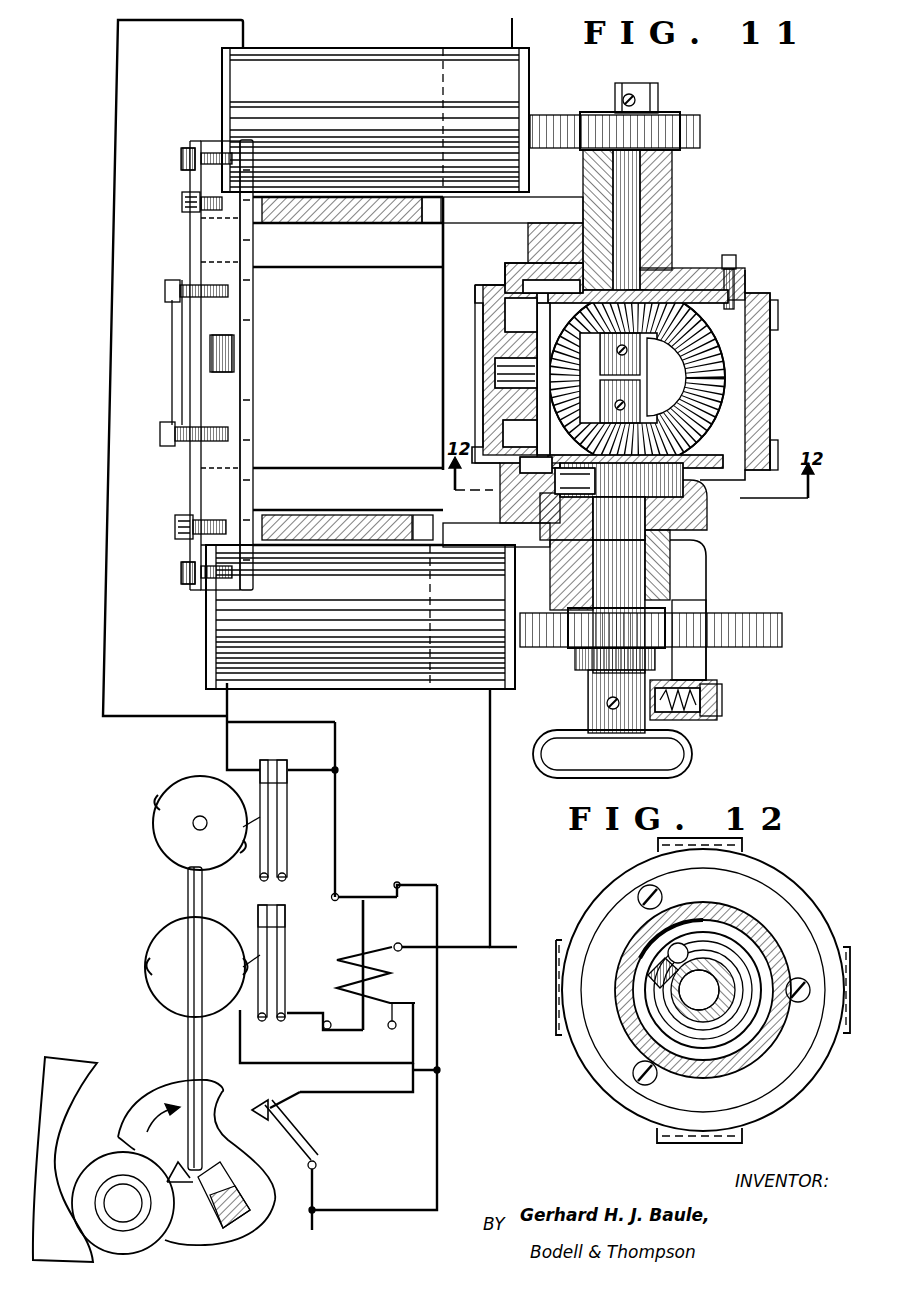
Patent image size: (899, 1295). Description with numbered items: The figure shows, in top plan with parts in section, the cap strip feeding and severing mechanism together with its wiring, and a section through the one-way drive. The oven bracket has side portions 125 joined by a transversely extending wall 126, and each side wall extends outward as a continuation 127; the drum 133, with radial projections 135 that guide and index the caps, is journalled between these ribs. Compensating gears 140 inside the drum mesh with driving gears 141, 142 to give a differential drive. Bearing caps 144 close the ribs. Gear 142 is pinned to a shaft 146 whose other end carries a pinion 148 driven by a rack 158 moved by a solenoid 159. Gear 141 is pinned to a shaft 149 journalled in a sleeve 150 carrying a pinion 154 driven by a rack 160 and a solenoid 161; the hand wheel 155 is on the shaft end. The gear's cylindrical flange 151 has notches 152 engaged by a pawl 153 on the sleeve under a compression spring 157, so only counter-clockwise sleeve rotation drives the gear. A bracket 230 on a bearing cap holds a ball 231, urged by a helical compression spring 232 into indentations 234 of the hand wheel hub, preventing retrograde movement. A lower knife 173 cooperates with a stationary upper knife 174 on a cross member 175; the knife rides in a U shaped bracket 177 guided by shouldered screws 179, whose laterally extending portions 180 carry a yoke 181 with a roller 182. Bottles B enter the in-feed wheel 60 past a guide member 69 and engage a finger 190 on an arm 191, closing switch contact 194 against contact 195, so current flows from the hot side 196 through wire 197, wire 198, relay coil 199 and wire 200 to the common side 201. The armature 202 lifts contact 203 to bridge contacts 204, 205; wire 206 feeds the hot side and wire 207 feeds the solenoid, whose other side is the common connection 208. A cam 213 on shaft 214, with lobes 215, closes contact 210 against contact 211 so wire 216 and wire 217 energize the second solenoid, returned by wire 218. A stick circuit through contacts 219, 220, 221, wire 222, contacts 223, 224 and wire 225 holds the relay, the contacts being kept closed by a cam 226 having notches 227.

In FIG. 11, the in-feed wheel 60 is at (141, 1096).
In FIG. 11, the guide member 69 is at (58, 1118).
In FIG. 11, the bottles B is at (88, 1172).
In FIG. 11, the side portions 125 is at (368, 222).
In FIG. 11, the transversely extending wall 126 is at (348, 371).
In FIG. 11, the continuation 127 is at (493, 222).
In FIG. 11, the drum 133 is at (757, 382).
In FIG. 11, the radial projections 135 is at (474, 290).
In FIG. 12, the radial projections 135 is at (738, 847).
In FIG. 11, the compensating gears 140 is at (540, 324).
In FIG. 11, the driving gear 141 is at (702, 443).
In FIG. 11, the driving gear 142 is at (677, 290).
In FIG. 11, the bearing caps 144 is at (672, 195).
In FIG. 11, the shaft 146 is at (632, 228).
In FIG. 11, the pinion 148 is at (667, 118).
In FIG. 11, the shaft 149 is at (633, 378).
In FIG. 11, the sleeve 150 is at (607, 573).
In FIG. 12, the sleeve 150 is at (722, 960).
In FIG. 11, the cylindrical flange 151 is at (557, 480).
In FIG. 12, the cylindrical flange 151 is at (722, 928).
In FIG. 12, the notches 152 is at (645, 984).
In FIG. 11, the pawl 153 is at (557, 474).
In FIG. 12, the pawl 153 is at (650, 965).
In FIG. 11, the pinion 154 is at (572, 646).
In FIG. 11, the hand wheel 155 is at (692, 752).
In FIG. 12, the compression spring 157 is at (662, 986).
In FIG. 11, the rack 158 is at (700, 135).
In FIG. 11, the solenoid 159 is at (353, 63).
In FIG. 11, the rack 160 is at (783, 630).
In FIG. 11, the solenoid 161 is at (392, 686).
In FIG. 11, the knife 173 is at (175, 386).
In FIG. 11, the stationary upper knife 174 is at (182, 352).
In FIG. 11, the cross member 175 is at (210, 243).
In FIG. 11, the U shaped bracket 177 is at (186, 480).
In FIG. 11, the shouldered screws 179 is at (186, 205).
In FIG. 11, the laterally extending portions 180 is at (194, 148).
In FIG. 11, the yoke 181 is at (248, 433).
In FIG. 11, the roller 182 is at (225, 358).
In FIG. 11, the bottle actuatable finger 190 is at (172, 1168).
In FIG. 11, the arm 191 is at (214, 1206).
In FIG. 11, the switch contact 194 is at (288, 1136).
In FIG. 11, the contact 195 is at (281, 1104).
In FIG. 11, the hot side of the line 196 is at (312, 1230).
In FIG. 11, the wire 197 is at (312, 1185).
In FIG. 11, the wire 198 is at (388, 1093).
In FIG. 11, the relay coil 199 is at (378, 946).
In FIG. 11, the wire 200 is at (458, 947).
In FIG. 11, the common side of the line 201 is at (517, 948).
In FIG. 11, the armature 202 is at (360, 924).
In FIG. 11, the contact 203 is at (353, 897).
In FIG. 11, the contact 204 is at (417, 962).
In FIG. 11, the contact 205 is at (337, 892).
In FIG. 11, the wire 206 is at (437, 1042).
In FIG. 11, the wire 207 is at (106, 372).
In FIG. 11, the common side connection 208 is at (510, 40).
In FIG. 11, the contact 210 is at (255, 827).
In FIG. 11, the contact 211 is at (289, 873).
In FIG. 11, the cam 213 is at (168, 840).
In FIG. 11, the shaft 214 is at (188, 889).
In FIG. 11, the lobes 215 is at (155, 803).
In FIG. 11, the wire 216 is at (305, 770).
In FIG. 11, the wire 217 is at (228, 704).
In FIG. 11, the wire 218 is at (490, 812).
In FIG. 11, the contact 219 is at (380, 1014).
In FIG. 11, the contact 220 is at (365, 1033).
In FIG. 11, the contact 221 is at (340, 1014).
In FIG. 11, the wire 222 is at (302, 1013).
In FIG. 11, the contact 223 is at (284, 975).
In FIG. 11, the contact 224 is at (326, 984).
In FIG. 11, the wire 225 is at (303, 1063).
In FIG. 11, the cam 226 is at (148, 945).
In FIG. 11, the notches 227 is at (150, 972).
In FIG. 11, the bracket 230 is at (700, 660).
In FIG. 11, the ball 231 is at (690, 722).
In FIG. 11, the helical compression spring 232 is at (710, 688).
In FIG. 11, the indentations 234 is at (588, 703).